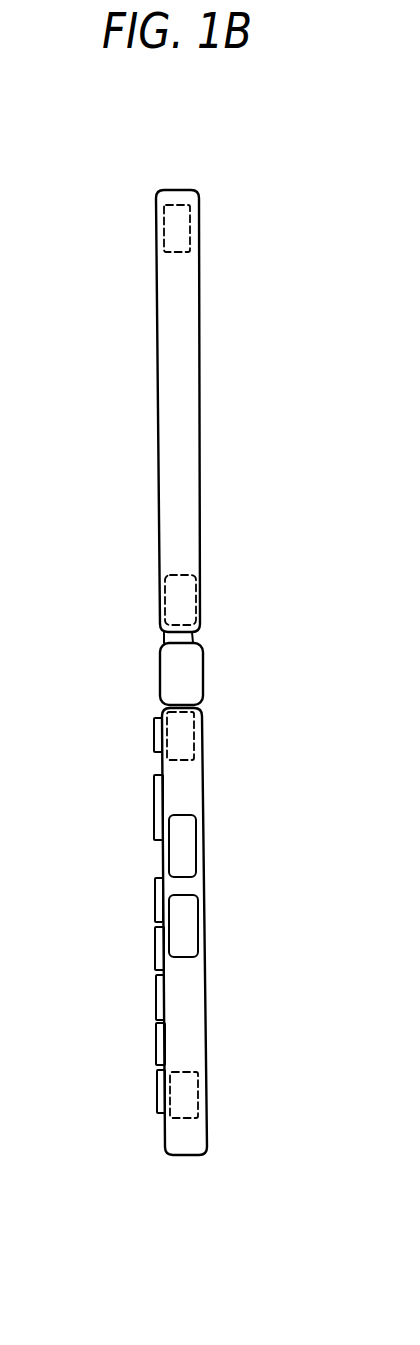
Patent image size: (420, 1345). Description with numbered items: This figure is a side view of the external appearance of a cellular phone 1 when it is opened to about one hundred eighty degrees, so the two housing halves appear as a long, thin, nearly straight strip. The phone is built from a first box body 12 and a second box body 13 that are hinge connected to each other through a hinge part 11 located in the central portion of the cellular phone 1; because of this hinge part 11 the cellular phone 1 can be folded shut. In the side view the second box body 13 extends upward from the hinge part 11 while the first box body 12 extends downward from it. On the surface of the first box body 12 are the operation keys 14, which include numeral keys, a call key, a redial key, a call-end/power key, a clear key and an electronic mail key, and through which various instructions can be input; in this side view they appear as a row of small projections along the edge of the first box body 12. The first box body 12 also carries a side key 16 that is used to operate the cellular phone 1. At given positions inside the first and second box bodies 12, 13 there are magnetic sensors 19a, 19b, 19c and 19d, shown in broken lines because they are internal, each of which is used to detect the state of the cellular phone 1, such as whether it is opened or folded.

The cellular phone 1 is at (245, 986).
The hinge part 11 is at (203, 675).
The first box body 12 is at (204, 790).
The second box body 13 is at (200, 420).
The operation keys 14 is at (145, 733).
The side key 16 is at (197, 848).
The magnetic sensor 19a is at (192, 225).
The magnetic sensor 19b is at (199, 1095).
The magnetic sensor 19c is at (197, 596).
The magnetic sensor 19d is at (195, 733).